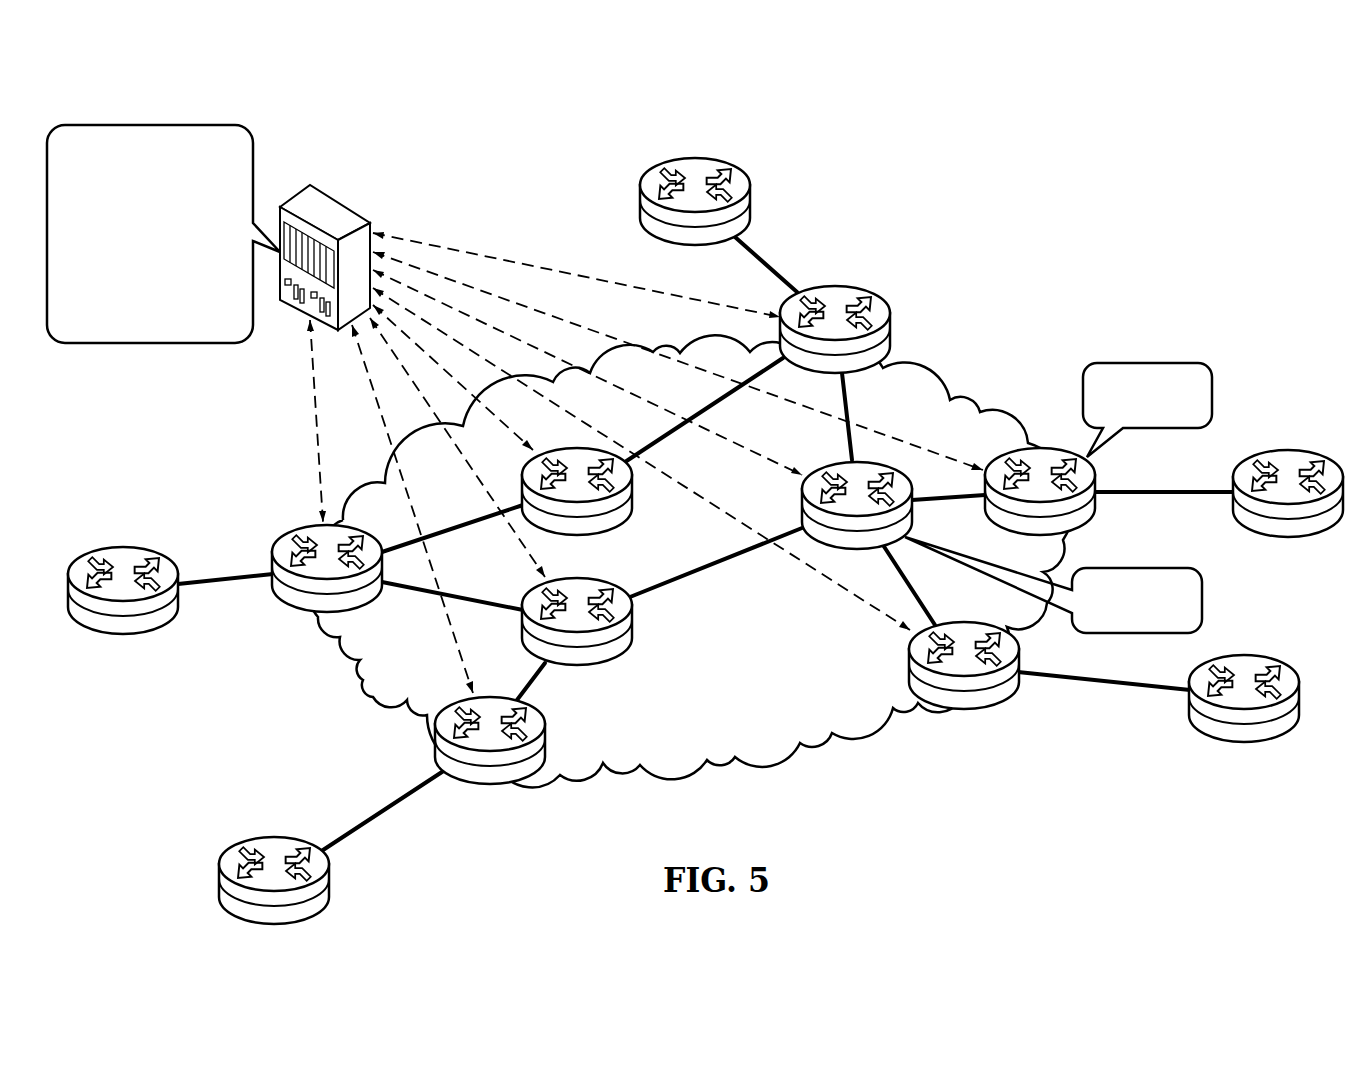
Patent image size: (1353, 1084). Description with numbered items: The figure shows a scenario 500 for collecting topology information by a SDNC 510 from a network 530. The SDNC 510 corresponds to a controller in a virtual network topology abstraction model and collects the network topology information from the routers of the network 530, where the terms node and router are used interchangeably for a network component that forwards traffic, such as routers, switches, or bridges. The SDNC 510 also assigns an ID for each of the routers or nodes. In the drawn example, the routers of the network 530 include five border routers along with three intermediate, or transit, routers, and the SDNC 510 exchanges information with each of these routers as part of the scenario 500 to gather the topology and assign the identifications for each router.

The scenario 500 is at (1097, 220).
The SDNC 510 is at (338, 207).
The network 530 is at (775, 776).